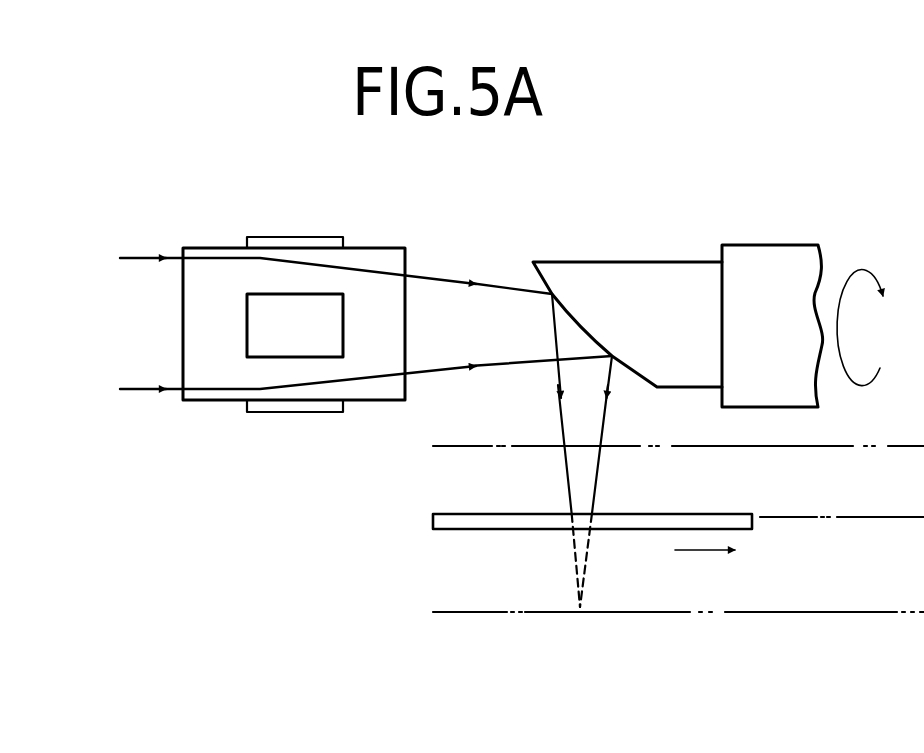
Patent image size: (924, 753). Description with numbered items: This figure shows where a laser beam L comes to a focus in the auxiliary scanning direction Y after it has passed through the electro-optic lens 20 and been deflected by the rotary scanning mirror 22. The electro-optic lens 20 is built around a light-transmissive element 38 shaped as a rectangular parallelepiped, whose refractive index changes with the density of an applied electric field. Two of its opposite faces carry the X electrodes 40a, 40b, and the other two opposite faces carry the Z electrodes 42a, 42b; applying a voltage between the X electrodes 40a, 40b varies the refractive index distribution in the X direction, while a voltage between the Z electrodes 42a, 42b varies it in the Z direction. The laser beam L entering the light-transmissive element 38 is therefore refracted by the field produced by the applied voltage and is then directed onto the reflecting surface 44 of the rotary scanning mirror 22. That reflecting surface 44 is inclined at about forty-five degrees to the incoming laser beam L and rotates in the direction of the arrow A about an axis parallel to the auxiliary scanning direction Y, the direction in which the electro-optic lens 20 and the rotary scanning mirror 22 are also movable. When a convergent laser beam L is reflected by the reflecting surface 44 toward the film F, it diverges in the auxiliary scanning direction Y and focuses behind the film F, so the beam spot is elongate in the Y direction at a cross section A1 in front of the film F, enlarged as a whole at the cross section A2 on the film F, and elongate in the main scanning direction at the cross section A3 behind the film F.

The electro-optic lens 20 is at (203, 423).
The light-transmissive element 38 is at (200, 351).
The X electrode 40a is at (198, 320).
The X electrode 40b is at (264, 325).
The Z electrode 42a is at (298, 238).
The Z electrode 42b is at (297, 412).
The reflecting surface 44 is at (543, 280).
The rotary scanning mirror 22 is at (685, 226).
The laser beam L is at (147, 258).
The rotation direction of reflecting surface A is at (860, 313).
The film F is at (456, 523).
The auxiliary scanning direction Y is at (705, 568).
The cross section in front of film A1 is at (760, 446).
The cross section on film A2 is at (785, 517).
The cross section behind film A3 is at (823, 612).